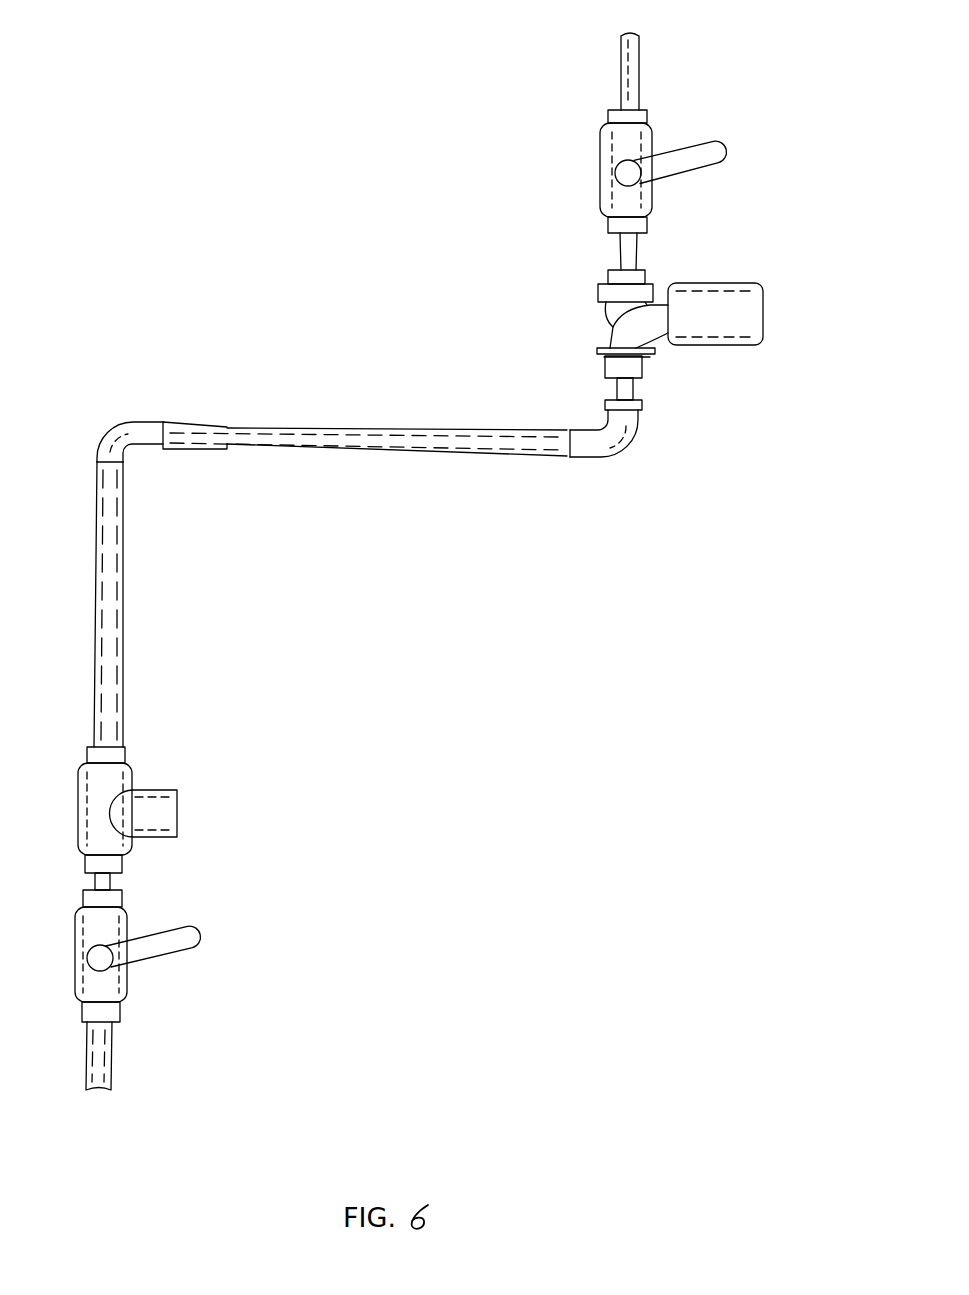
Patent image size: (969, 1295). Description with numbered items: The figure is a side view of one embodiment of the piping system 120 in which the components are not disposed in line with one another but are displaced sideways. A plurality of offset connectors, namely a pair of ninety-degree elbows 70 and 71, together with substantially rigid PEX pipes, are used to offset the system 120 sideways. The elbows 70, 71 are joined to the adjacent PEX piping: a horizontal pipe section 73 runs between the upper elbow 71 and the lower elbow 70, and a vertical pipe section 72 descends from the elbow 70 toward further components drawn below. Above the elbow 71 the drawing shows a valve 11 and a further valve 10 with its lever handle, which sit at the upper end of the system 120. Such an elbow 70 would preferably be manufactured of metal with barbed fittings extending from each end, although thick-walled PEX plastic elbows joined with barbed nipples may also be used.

The system 120 is at (720, 62).
The inlet valve 11 is at (601, 179).
The tee valve 10 is at (611, 337).
The elbow 71 is at (577, 430).
The horizontal tube 73 is at (313, 430).
The elbow 70 is at (115, 432).
The vertical tube 72 is at (100, 595).